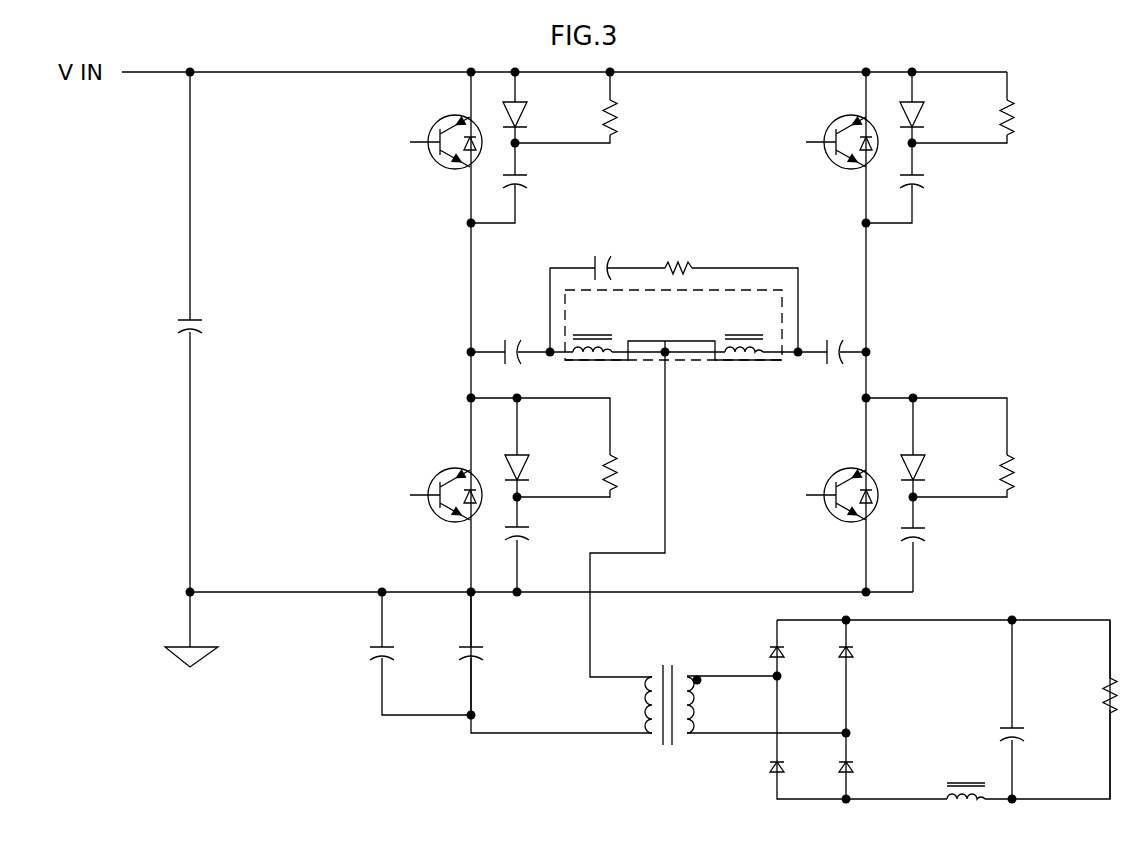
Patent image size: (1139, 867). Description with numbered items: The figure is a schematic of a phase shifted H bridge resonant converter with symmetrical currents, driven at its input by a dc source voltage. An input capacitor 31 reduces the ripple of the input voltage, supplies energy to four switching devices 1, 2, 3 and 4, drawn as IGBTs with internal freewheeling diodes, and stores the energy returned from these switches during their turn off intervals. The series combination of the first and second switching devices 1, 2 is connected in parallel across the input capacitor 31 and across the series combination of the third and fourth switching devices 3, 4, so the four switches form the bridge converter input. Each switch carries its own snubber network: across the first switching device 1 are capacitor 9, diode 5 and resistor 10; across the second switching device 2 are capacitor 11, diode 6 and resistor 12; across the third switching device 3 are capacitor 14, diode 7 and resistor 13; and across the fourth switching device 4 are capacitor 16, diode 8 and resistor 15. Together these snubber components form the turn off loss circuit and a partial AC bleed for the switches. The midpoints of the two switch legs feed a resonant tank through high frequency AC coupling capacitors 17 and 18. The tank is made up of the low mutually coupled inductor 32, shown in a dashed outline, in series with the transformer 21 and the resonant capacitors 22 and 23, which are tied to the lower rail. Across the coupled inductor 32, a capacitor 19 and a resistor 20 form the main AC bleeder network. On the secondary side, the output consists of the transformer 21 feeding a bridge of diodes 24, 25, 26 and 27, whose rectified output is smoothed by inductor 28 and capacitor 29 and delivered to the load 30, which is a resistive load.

The switch S1 (IGBT) 1 is at (418, 136).
The switch S2 (IGBT) 2 is at (418, 490).
The switch S3 (IGBT) 3 is at (813, 137).
The switch S4 (IGBT) 4 is at (815, 491).
The diode 5 is at (528, 124).
The diode 6 is at (522, 450).
The diode 7 is at (926, 124).
The diode 8 is at (919, 452).
The capacitor 9 is at (535, 190).
The resistor 10 is at (624, 126).
The capacitor 11 is at (540, 542).
The resistor 12 is at (610, 456).
The resistor 13 is at (1021, 126).
The capacitor 14 is at (928, 201).
The resistor 15 is at (1004, 456).
The capacitor 16 is at (934, 547).
The capacitor 17 is at (508, 324).
The capacitor 18 is at (822, 324).
The capacitor 19 is at (606, 240).
The resistor 20 is at (683, 240).
The transformer 21 is at (664, 650).
The resonant capacitor 22 is at (374, 640).
The resonant capacitor 23 is at (464, 640).
The diode 24 is at (767, 655).
The diode 25 is at (835, 655).
The diode 26 is at (769, 769).
The diode 27 is at (836, 769).
The inductor 28 is at (938, 786).
The capacitor 29 is at (994, 730).
The load 30 is at (1096, 690).
The input capacitor 31 is at (184, 318).
The low mutually coupled inductor 32 is at (742, 332).